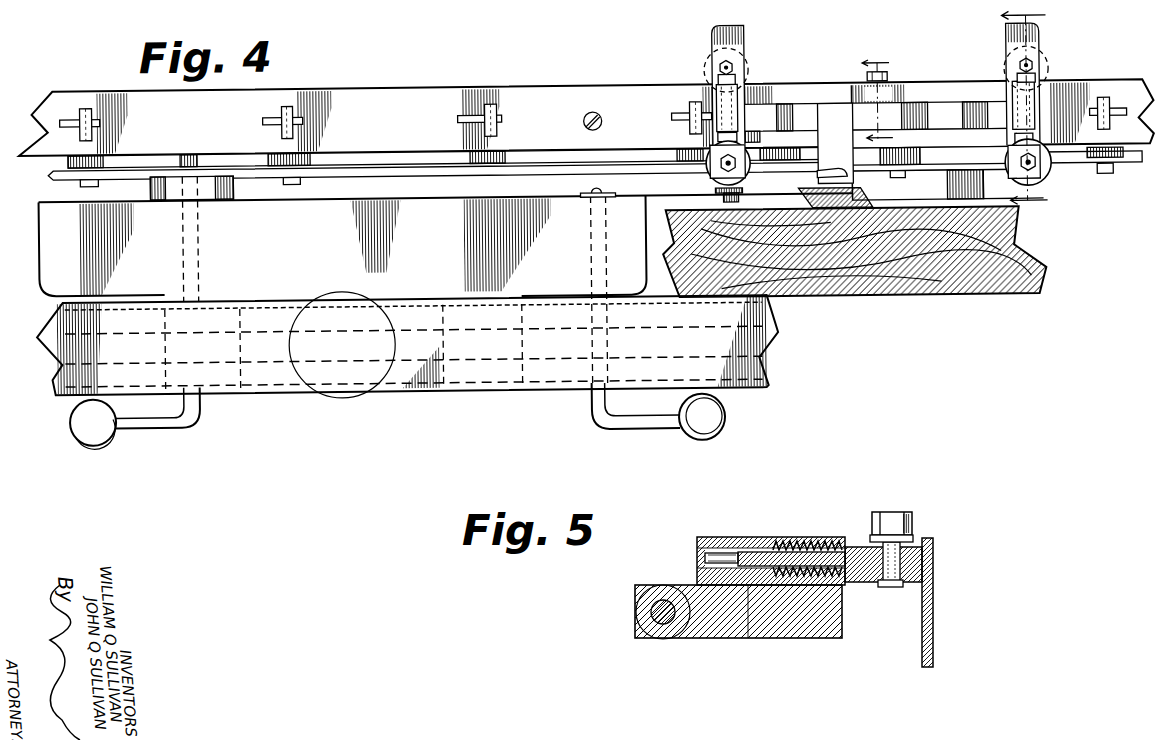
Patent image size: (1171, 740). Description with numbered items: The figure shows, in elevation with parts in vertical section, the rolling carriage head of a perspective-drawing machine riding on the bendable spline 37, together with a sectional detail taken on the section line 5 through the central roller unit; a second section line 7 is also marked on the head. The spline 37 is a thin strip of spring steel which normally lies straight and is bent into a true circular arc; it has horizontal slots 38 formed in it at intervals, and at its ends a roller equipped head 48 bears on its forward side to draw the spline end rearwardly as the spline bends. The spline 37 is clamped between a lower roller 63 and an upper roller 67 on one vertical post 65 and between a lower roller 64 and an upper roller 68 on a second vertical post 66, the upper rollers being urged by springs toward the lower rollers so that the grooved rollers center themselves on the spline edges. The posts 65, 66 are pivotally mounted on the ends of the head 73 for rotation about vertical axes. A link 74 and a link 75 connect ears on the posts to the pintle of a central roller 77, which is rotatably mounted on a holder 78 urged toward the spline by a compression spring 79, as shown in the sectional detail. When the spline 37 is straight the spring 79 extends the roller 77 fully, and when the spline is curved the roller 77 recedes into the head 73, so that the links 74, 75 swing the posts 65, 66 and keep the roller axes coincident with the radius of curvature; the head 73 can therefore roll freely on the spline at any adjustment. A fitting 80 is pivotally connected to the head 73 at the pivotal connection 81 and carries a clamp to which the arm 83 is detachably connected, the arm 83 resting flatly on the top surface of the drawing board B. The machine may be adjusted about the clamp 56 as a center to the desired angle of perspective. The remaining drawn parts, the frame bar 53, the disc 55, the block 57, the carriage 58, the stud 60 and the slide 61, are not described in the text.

In FIG. 4, the bendable spline 37 is at (568, 100).
In FIG. 5, the bendable spline 37 is at (934, 610).
In FIG. 4, the horizontal slots 38 is at (280, 110).
In FIG. 4, the roller equipped head 48 is at (288, 104).
In FIG. 4, the frame bar 53 is at (732, 364).
In FIG. 4, the pivot disc 55 is at (347, 397).
In FIG. 4, the clamp 56 is at (200, 417).
In FIG. 4, the bracket block 57 is at (230, 186).
In FIG. 4, the carriage 58 is at (295, 197).
In FIG. 4, the stud 60 is at (655, 195).
In FIG. 4, the slide block 61 is at (895, 196).
In FIG. 4, the lower roller 63 is at (747, 179).
In FIG. 4, the lower roller 64 is at (1047, 180).
In FIG. 4, the vertical post 65 is at (740, 44).
In FIG. 4, the vertical post 66 is at (1020, 45).
In FIG. 4, the upper roller 67 is at (745, 71).
In FIG. 4, the upper roller 68 is at (1007, 70).
In FIG. 4, the fitting 80 is at (827, 122).
In FIG. 5, the fitting 80 is at (665, 637).
In FIG. 4, the pivotal connection 81 is at (812, 184).
In FIG. 4, the arm 83 is at (860, 196).
In FIG. 4, the board B is at (1050, 283).
In FIG. 4, the section line 5— 5 is at (887, 91).
In FIG. 4, the section line 7- 7 is at (1034, 111).
In FIG. 5, the head 73 is at (845, 630).
In FIG. 5, the link 74 is at (907, 538).
In FIG. 5, the link 75 is at (911, 540).
In FIG. 5, the central roller 77 is at (932, 553).
In FIG. 5, the holder 78 is at (830, 552).
In FIG. 5, the compression spring 79 is at (813, 540).